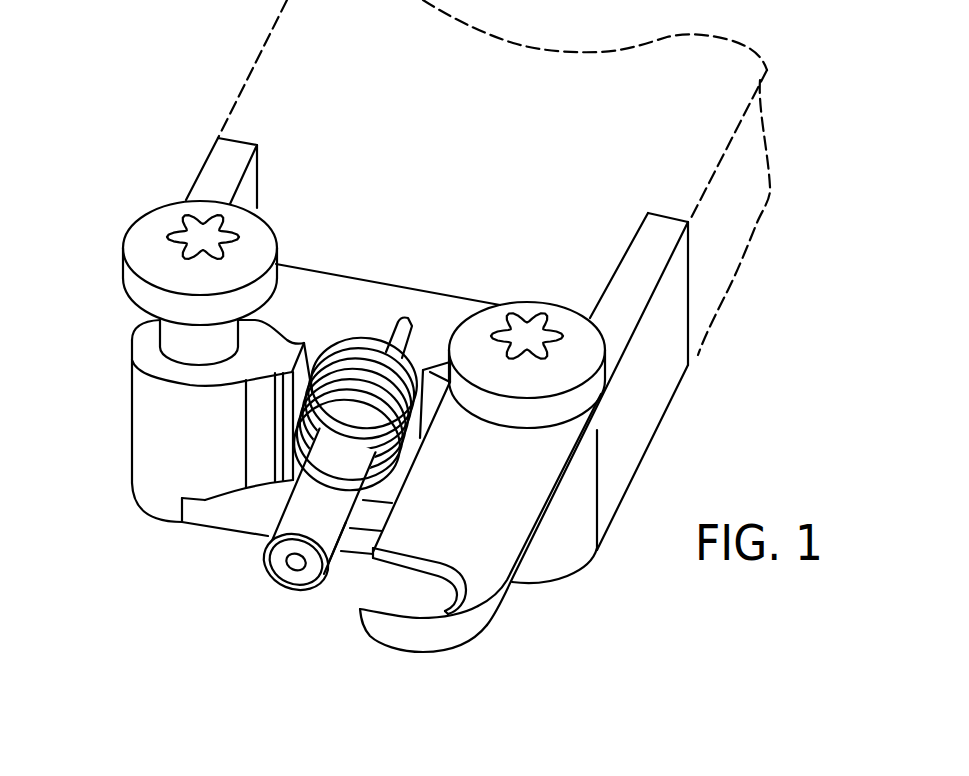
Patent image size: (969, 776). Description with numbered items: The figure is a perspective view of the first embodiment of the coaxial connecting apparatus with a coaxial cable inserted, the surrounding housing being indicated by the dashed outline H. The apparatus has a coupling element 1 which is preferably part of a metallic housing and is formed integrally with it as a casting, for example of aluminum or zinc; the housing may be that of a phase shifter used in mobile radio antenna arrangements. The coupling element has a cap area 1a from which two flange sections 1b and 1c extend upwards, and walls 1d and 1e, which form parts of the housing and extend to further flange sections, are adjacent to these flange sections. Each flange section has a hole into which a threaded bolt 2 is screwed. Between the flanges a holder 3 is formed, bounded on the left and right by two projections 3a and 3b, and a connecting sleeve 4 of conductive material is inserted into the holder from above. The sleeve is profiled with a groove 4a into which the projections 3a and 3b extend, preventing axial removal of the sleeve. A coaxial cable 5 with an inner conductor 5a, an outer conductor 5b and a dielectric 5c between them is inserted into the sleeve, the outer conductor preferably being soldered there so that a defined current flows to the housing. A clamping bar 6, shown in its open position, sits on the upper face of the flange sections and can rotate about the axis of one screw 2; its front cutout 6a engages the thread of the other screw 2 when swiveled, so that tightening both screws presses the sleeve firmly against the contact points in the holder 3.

The coupling element 1 is at (126, 425).
The cap area 1a is at (228, 522).
The flange section 1b is at (153, 467).
The flange section 1c is at (558, 557).
The wall 1d is at (238, 140).
The wall 1e is at (670, 215).
The threaded bolt 2 is at (142, 252).
The holder 3 is at (330, 338).
The projection 3a is at (268, 367).
The projection 3b is at (435, 370).
The connecting sleeve 4 is at (360, 338).
The groove 4a is at (377, 372).
The coaxial cable 5 is at (298, 590).
The inner conductor 5a is at (290, 563).
The outer conductor 5b is at (337, 560).
The dielectric 5c is at (312, 575).
The clamping bar 6 is at (483, 640).
The cutout 6a is at (430, 603).
The housing outline H is at (747, 256).